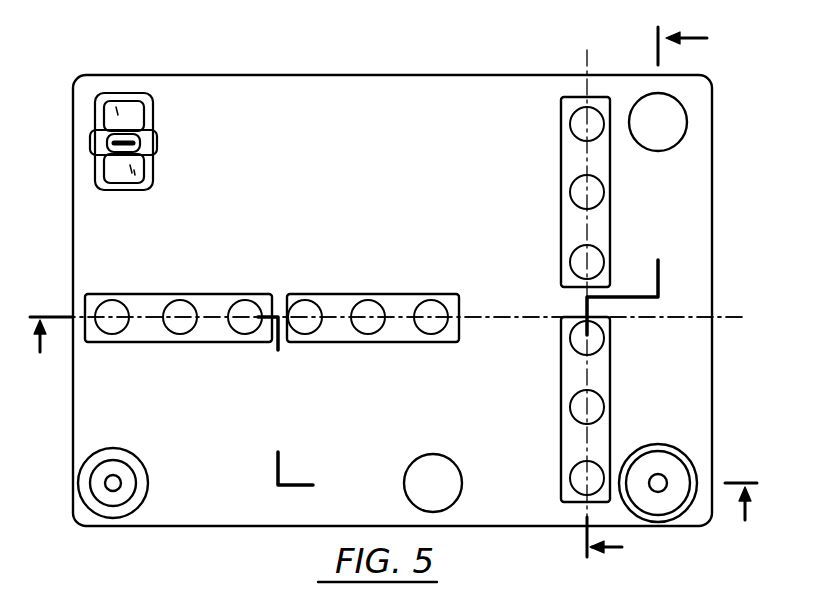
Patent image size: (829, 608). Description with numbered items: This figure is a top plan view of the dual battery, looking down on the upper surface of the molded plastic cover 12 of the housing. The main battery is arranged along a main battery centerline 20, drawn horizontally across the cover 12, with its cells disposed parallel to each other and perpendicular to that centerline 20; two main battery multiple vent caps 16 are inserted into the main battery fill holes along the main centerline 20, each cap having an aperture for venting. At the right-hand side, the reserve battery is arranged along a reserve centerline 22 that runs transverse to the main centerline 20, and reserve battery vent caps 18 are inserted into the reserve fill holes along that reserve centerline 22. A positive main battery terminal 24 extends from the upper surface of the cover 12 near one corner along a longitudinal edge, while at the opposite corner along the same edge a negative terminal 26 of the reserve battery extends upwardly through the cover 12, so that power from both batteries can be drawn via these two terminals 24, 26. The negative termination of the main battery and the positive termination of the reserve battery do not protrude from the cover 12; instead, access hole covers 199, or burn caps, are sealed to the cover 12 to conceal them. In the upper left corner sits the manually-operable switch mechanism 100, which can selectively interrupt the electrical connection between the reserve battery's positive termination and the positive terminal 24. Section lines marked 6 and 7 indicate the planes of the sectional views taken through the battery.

The cover 12 is at (407, 78).
The main battery multiple vent caps 16 is at (253, 262).
The reserve battery vent caps 18 is at (565, 215).
The main battery centerline 20 is at (718, 312).
The reserve centerline 22 is at (586, 58).
The positive main battery terminal 24 is at (137, 483).
The negative terminal 26 is at (683, 458).
The switch mechanism 100 is at (101, 126).
The access hole covers 199 is at (677, 115).
The section line 6- 6 is at (393, 432).
The section line 7- 7 is at (659, 294).